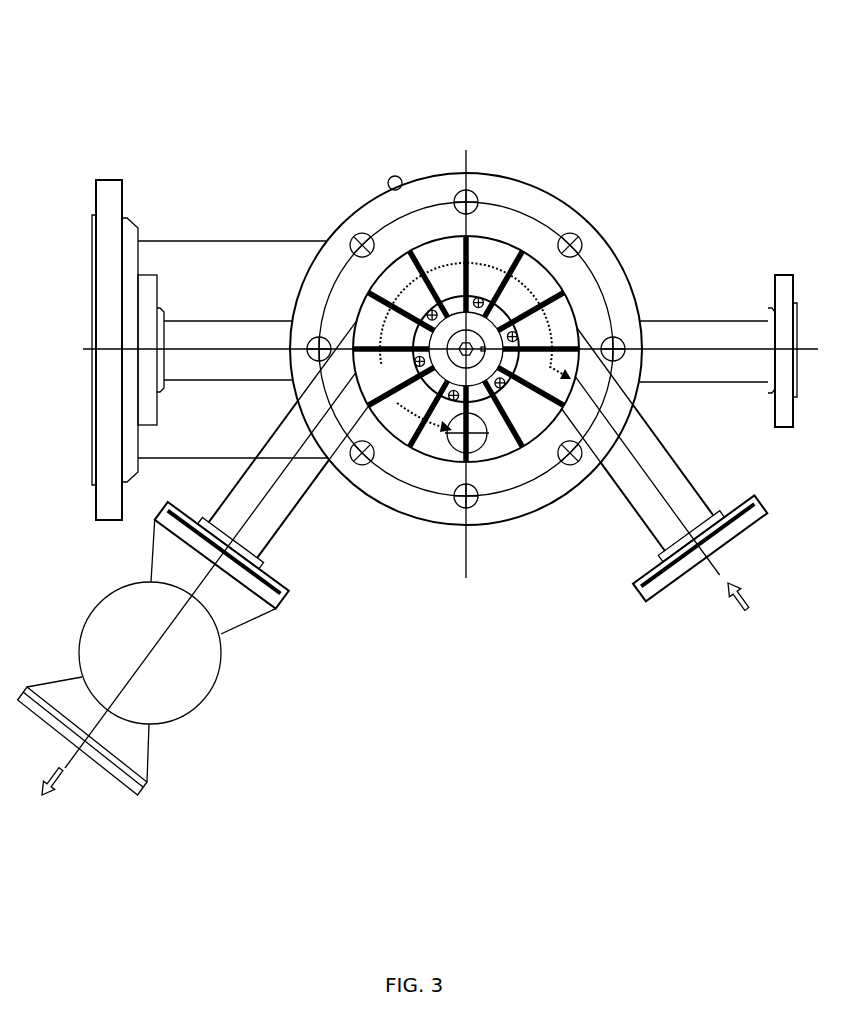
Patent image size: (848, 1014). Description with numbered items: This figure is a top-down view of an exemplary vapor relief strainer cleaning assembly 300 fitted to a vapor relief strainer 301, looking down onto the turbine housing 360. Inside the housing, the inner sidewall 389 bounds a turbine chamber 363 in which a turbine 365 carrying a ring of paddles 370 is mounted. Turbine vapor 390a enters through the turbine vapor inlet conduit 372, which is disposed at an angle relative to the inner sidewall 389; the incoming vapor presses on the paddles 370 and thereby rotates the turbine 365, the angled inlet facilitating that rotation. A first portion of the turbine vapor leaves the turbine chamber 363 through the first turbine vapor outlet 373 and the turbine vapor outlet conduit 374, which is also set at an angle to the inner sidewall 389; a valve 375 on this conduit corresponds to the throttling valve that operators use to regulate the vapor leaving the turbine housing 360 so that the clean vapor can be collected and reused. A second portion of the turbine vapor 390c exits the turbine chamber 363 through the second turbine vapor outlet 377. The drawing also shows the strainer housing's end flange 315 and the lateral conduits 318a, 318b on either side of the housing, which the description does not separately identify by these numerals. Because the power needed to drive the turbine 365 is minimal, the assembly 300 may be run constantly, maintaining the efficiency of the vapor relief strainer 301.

The vapor relief strainer cleaning assembly 300 is at (316, 90).
The vapor relief strainer 301 is at (626, 236).
The flange 315 is at (196, 262).
The inlet conduit 318a is at (257, 334).
The outlet conduit 318b is at (726, 336).
The turbine housing 360 is at (598, 226).
The turbine chamber 363 is at (432, 264).
The turbine 365 is at (654, 268).
The paddles 370 is at (500, 262).
The turbine vapor inlet conduit 372 is at (662, 441).
The first turbine vapor outlet 373 is at (319, 466).
The turbine vapor outlet conduit 374 is at (287, 505).
The valve 375 is at (117, 614).
The second turbine vapor outlet 377 is at (447, 445).
The inner sidewall 389 is at (369, 365).
The turbine vapor 390a is at (738, 606).
The second portion of the turbine vapor 390c is at (397, 403).